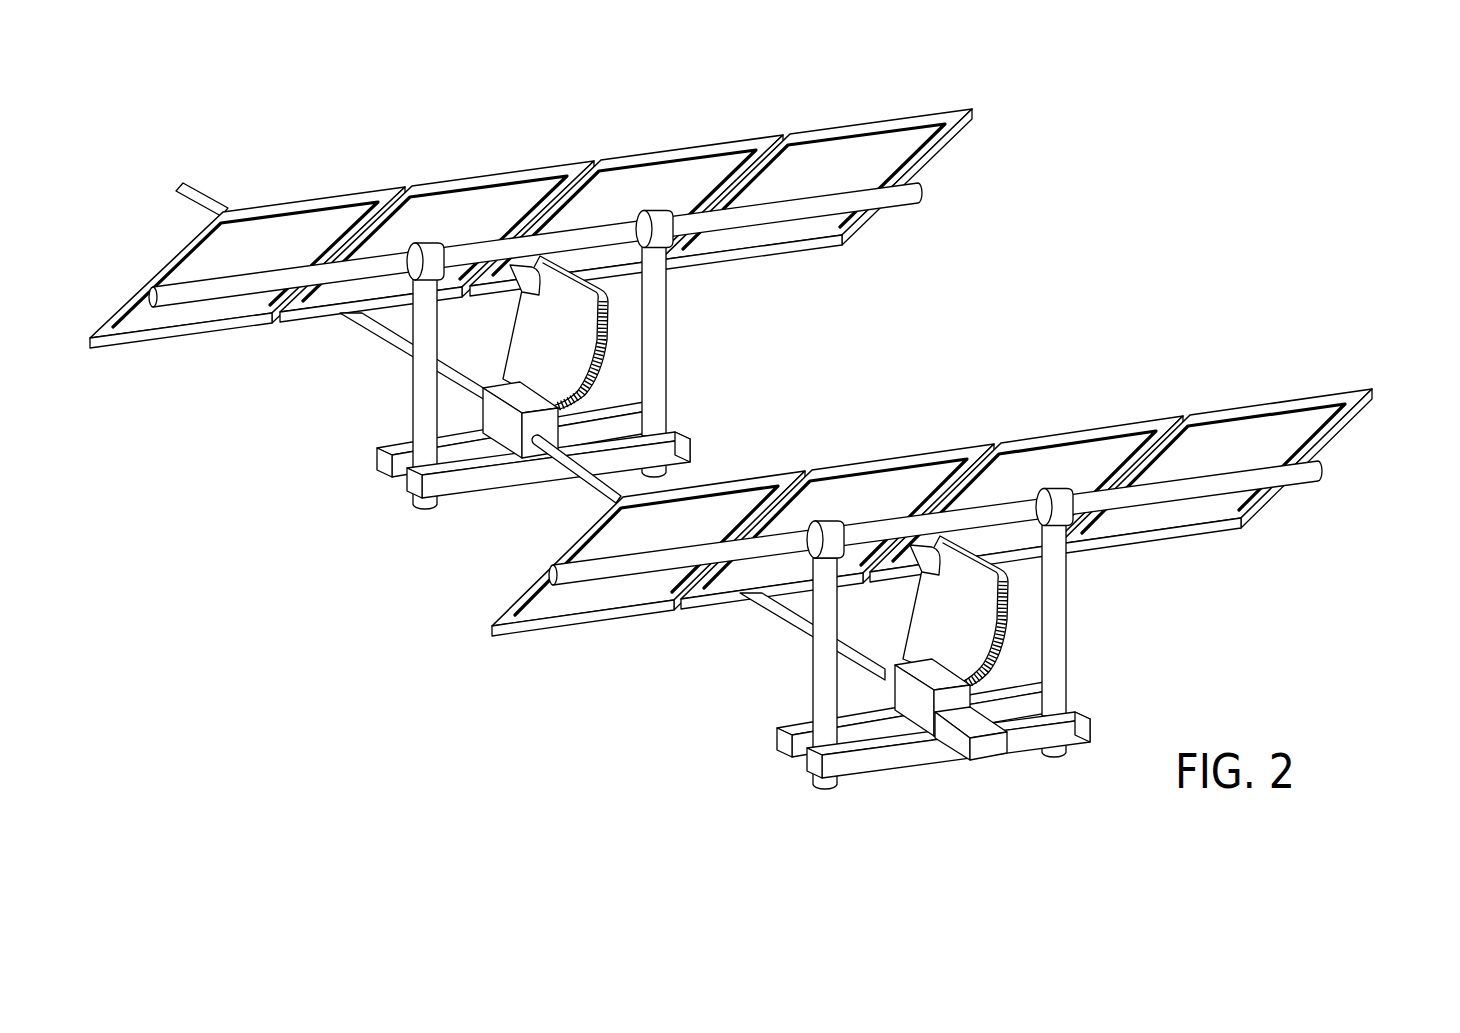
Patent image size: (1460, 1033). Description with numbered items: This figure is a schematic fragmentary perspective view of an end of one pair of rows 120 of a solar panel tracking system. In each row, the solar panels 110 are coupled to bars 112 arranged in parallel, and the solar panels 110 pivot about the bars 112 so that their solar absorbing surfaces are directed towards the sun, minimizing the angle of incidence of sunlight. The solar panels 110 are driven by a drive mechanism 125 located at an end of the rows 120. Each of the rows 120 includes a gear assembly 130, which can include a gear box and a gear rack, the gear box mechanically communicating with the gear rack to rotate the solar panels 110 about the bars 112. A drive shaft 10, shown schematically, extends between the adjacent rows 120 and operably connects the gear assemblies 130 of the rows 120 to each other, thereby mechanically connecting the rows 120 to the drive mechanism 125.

The drive shaft 10 is at (397, 347).
The solar panels 110 is at (933, 114).
The bars 112 is at (204, 300).
The rows 120 is at (214, 125).
The drive mechanism 125 is at (988, 757).
The gear assembly 130 is at (610, 322).